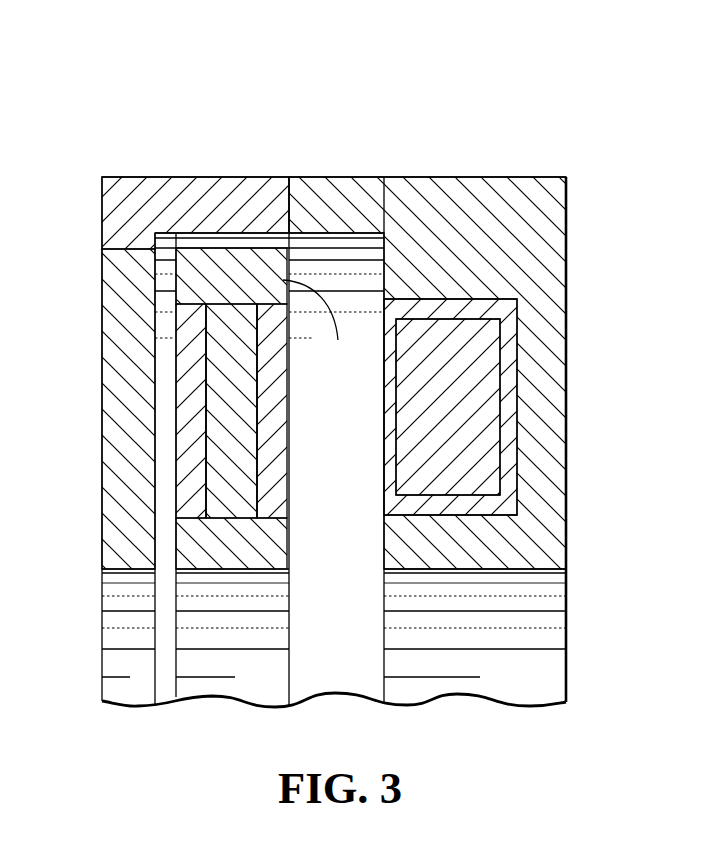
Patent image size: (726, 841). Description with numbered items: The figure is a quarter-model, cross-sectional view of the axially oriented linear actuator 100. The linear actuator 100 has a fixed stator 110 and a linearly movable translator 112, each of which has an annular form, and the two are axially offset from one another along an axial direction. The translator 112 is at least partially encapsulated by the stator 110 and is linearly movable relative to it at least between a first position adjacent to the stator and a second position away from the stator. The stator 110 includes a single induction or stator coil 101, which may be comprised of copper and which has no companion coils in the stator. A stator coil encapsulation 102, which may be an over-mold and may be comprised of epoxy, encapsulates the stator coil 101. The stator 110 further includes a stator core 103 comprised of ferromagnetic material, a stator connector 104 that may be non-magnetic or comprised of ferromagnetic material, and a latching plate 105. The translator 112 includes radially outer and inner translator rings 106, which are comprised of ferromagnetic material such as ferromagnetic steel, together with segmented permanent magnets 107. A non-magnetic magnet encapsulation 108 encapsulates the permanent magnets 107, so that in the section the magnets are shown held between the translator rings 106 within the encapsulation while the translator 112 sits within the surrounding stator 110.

The linear actuator 100 is at (210, 100).
The stator coil 101 is at (463, 413).
The stator coil encapsulation 102 is at (512, 376).
The stator core 103 is at (464, 177).
The stator connector 104 is at (183, 176).
The latching plate 105 is at (102, 310).
The translator rings 106 is at (245, 540).
The segmented permanent magnets 107 is at (235, 404).
The magnet encapsulation 108 is at (187, 457).
The stator 110 is at (476, 643).
The translator 112 is at (233, 642).